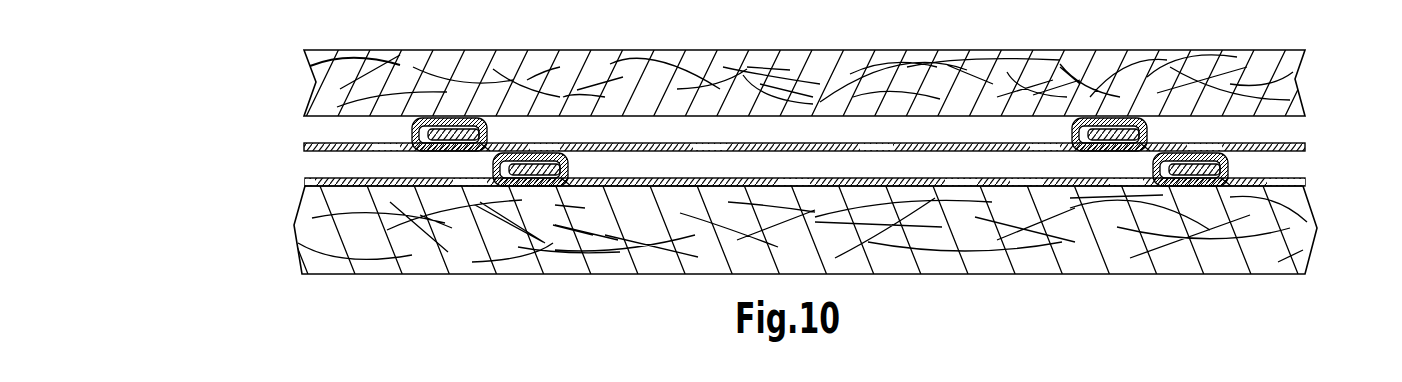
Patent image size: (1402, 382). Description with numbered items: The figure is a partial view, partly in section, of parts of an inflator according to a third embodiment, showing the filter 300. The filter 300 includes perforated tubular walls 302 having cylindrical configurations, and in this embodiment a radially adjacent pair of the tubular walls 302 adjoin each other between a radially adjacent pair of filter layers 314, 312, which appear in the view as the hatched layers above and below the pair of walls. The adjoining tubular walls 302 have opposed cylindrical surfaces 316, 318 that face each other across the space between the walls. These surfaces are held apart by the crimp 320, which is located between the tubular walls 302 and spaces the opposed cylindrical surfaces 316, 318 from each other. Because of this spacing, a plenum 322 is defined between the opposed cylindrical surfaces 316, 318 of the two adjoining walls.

The filter 300 is at (190, 98).
The perforated tubular walls 302 is at (283, 179).
The filter layer 312 is at (300, 82).
The filter layer 314 is at (318, 240).
The cylindrical surface 316 is at (693, 187).
The cylindrical surface 318 is at (933, 148).
The crimp 320 is at (1275, 166).
The plenum 322 is at (812, 158).